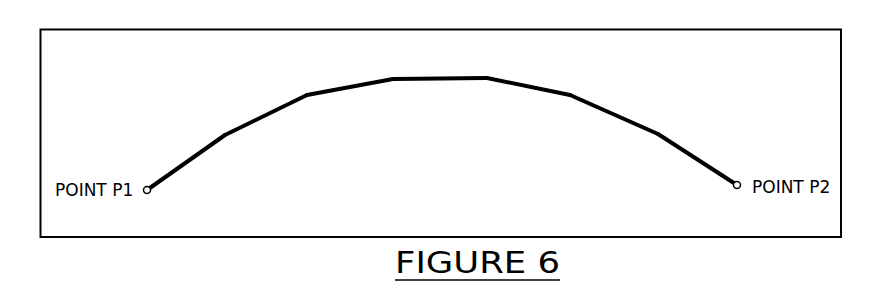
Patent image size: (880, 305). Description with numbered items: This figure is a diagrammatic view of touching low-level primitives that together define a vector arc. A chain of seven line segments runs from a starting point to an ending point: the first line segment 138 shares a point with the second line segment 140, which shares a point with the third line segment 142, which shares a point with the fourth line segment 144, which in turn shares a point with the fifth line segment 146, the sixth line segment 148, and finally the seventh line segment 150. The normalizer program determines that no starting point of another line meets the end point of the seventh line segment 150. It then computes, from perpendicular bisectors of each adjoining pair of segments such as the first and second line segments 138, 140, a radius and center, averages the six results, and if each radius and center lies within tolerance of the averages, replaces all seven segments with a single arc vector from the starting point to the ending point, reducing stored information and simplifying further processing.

The first line segment 138 is at (173, 173).
The second line segment 140 is at (258, 120).
The third line segment 142 is at (343, 92).
The fourth line segment 144 is at (438, 80).
The fifth line segment 146 is at (537, 92).
The sixth line segment 148 is at (625, 118).
The seventh line segment 150 is at (713, 170).